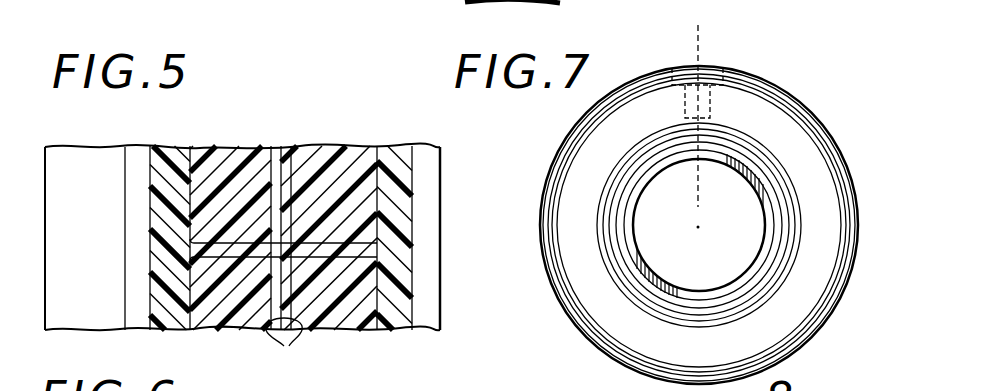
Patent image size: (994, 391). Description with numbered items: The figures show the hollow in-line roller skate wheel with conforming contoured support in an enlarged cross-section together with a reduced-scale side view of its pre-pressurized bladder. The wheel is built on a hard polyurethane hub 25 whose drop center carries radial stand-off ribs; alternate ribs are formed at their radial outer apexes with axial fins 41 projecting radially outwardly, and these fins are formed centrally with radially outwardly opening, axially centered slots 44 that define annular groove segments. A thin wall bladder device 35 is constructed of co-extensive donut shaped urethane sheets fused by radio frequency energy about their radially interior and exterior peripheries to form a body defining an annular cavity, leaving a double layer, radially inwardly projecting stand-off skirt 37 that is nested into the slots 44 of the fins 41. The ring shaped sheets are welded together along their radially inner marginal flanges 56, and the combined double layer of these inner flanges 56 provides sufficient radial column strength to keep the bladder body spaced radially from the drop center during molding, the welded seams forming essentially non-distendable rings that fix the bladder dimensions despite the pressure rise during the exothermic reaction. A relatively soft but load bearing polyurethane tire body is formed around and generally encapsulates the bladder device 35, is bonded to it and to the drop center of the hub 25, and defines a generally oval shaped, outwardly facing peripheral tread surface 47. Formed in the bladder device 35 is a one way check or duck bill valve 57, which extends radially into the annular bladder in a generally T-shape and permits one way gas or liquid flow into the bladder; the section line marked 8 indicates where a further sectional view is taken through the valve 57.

In FIG. 5, the hub 25 is at (441, 243).
In FIG. 5, the stand-off skirt 37 is at (296, 165).
In FIG. 7, the stand-off skirt 37 is at (732, 287).
In FIG. 5, the axial fins 41 is at (355, 234).
In FIG. 5, the axially centered slots 44 is at (268, 258).
In FIG. 5, the peripheral tread surface 47 is at (413, 265).
In FIG. 5, the radially inner marginal flanges 56 is at (284, 348).
In FIG. 7, the bladder device 35 is at (836, 148).
In FIG. 7, the duck bill valve 57 is at (717, 97).
In FIG. 7, the section line 8- 8 is at (750, 25).